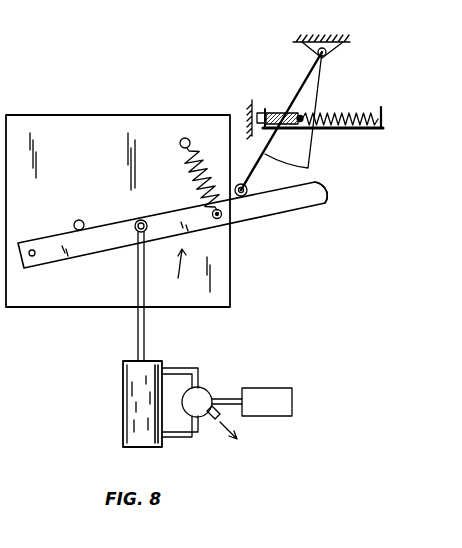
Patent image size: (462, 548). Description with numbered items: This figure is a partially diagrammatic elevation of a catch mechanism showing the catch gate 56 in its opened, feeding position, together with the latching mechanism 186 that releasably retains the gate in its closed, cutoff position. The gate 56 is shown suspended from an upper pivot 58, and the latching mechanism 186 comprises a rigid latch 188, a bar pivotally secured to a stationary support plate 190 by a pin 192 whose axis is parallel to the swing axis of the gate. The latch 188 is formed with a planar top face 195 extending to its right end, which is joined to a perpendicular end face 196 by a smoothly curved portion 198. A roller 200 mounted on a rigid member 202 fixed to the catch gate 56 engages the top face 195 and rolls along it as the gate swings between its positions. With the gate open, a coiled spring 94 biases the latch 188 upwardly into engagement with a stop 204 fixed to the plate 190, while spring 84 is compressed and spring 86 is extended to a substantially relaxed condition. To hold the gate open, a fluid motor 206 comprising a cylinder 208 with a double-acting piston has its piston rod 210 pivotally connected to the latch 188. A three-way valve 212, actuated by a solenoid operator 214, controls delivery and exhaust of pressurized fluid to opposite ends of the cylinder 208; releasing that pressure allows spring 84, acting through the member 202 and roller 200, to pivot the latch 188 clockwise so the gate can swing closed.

The stationary support plate 190 is at (66, 130).
The latch 188 is at (293, 205).
The curved portion 198 is at (318, 181).
The end face 196 is at (327, 193).
The pivot 58 is at (328, 54).
The catch gate 56 is at (306, 150).
The rigid member 202 is at (244, 175).
The spring 84 is at (283, 112).
The spring 86 is at (350, 114).
The tension spring 94 is at (194, 171).
The roller 200 is at (248, 190).
The planar top face 195 is at (121, 223).
The stop 204 is at (74, 226).
The pin 192 is at (35, 256).
The latching mechanism 186 is at (177, 274).
The piston rod 210 is at (146, 336).
The fluid motor 206 is at (107, 431).
The cylinder 208 is at (146, 448).
The 3-way valve 212 is at (210, 387).
The solenoid operator 214 is at (287, 387).